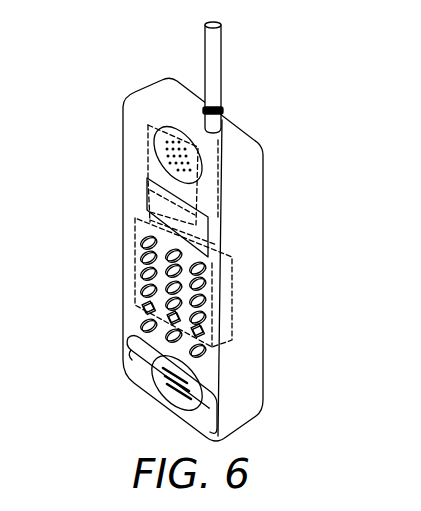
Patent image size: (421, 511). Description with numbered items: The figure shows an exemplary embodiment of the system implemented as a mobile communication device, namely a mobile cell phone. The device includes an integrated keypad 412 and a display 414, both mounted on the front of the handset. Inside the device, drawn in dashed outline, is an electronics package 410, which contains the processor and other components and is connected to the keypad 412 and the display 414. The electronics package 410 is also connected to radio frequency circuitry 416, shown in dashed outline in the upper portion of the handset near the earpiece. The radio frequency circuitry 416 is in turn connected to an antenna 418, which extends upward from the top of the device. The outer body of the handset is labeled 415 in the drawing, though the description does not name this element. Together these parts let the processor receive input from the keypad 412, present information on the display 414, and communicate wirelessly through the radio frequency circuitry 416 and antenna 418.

The electronics package 410 is at (232, 303).
The keypad 412 is at (140, 287).
The display 414 is at (147, 212).
The housing 415 is at (260, 366).
The radio frequency circuitry 416 is at (152, 173).
The antenna 418 is at (218, 62).